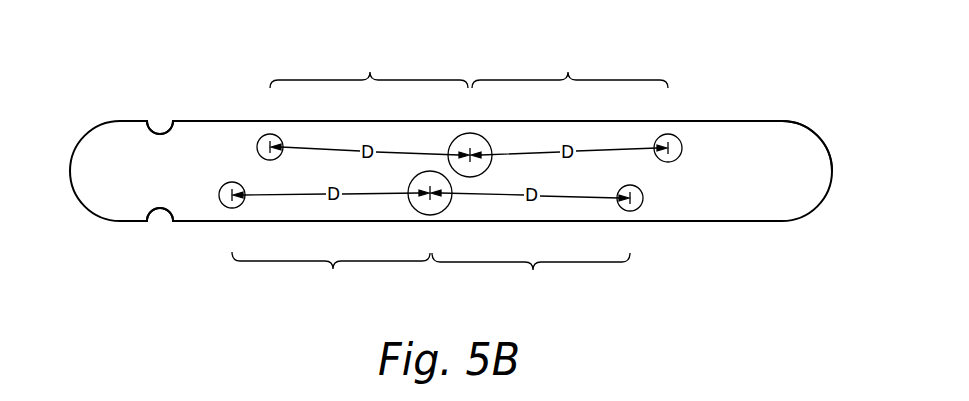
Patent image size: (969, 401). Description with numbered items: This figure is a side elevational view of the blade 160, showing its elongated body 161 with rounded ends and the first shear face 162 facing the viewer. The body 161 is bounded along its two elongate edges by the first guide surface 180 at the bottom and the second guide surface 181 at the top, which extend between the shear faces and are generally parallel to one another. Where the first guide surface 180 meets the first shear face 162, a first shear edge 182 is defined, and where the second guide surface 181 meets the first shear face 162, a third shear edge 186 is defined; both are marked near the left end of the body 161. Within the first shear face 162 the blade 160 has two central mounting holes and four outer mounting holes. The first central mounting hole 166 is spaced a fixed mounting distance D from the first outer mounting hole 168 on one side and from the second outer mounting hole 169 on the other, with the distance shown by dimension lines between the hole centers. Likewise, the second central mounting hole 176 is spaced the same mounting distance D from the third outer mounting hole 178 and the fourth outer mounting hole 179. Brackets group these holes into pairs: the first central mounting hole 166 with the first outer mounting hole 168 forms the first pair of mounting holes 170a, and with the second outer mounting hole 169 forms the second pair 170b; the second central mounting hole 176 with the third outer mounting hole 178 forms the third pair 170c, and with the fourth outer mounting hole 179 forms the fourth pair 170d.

The blade 160 is at (832, 172).
The body 161 is at (798, 142).
The first shear face 162 is at (772, 187).
The first central mounting hole 166 is at (473, 135).
The first outer mounting hole 168 is at (258, 138).
The second outer mounting hole 169 is at (683, 146).
The first pair of mounting holes 170a is at (370, 78).
The second pair of mounting holes 170b is at (568, 78).
The third pair of mounting holes 170c is at (333, 263).
The fourth pair of mounting holes 170d is at (533, 264).
The second central mounting hole 176 is at (436, 209).
The third outer mounting hole 178 is at (227, 207).
The fourth outer mounting hole 179 is at (643, 204).
The first guide surface 180 is at (128, 222).
The second guide surface 181 is at (133, 120).
The first shear edge 182 is at (168, 213).
The third shear edge 186 is at (174, 118).